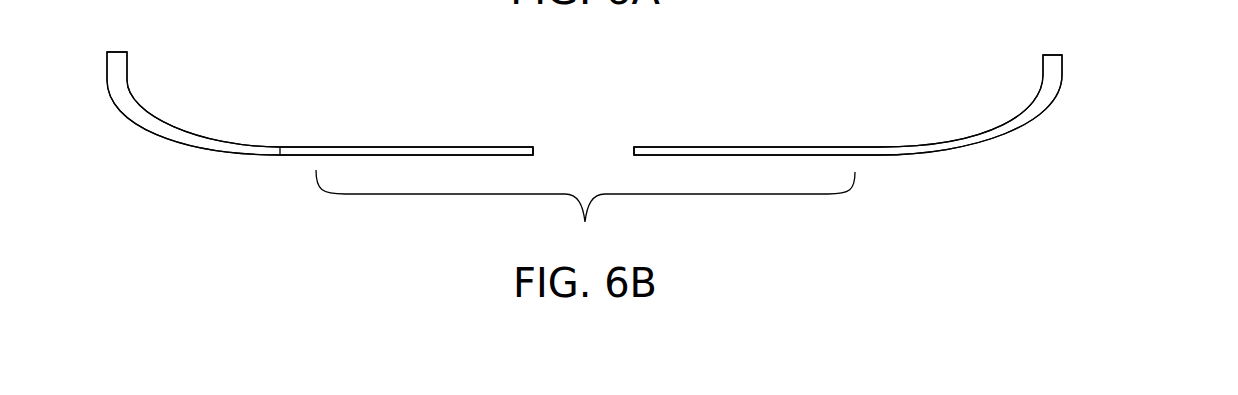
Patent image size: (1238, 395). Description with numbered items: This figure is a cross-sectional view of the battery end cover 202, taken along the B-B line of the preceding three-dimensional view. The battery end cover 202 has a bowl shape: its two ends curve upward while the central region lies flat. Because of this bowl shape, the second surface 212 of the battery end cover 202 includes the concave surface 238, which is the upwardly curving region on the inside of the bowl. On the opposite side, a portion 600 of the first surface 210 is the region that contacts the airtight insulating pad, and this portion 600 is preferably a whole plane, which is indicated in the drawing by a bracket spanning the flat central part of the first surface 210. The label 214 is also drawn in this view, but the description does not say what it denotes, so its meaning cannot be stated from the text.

The battery end cover 202 is at (971, 38).
The first surface 210 is at (948, 153).
The second surface 212 is at (397, 147).
The gap / opening 214 is at (583, 146).
The concave surface 238 is at (143, 105).
The portion 600 is at (585, 211).